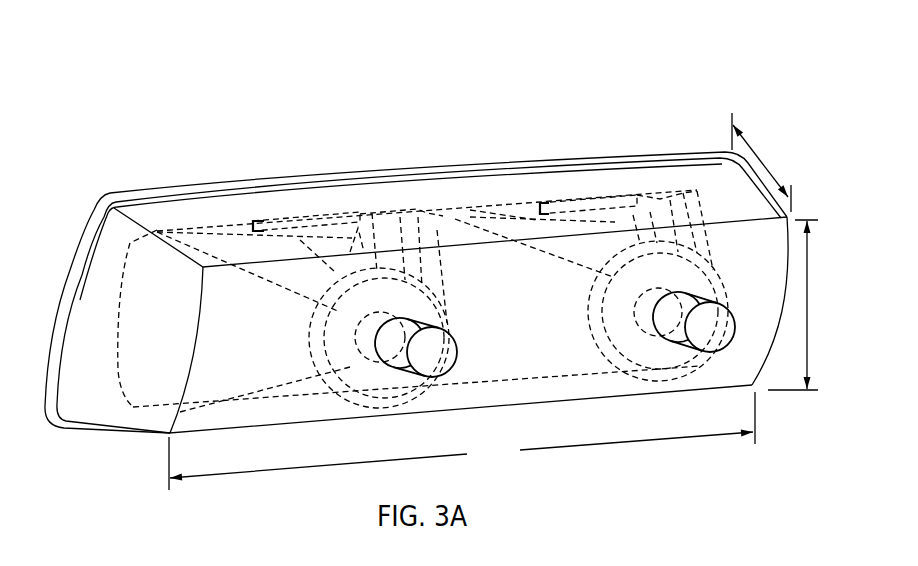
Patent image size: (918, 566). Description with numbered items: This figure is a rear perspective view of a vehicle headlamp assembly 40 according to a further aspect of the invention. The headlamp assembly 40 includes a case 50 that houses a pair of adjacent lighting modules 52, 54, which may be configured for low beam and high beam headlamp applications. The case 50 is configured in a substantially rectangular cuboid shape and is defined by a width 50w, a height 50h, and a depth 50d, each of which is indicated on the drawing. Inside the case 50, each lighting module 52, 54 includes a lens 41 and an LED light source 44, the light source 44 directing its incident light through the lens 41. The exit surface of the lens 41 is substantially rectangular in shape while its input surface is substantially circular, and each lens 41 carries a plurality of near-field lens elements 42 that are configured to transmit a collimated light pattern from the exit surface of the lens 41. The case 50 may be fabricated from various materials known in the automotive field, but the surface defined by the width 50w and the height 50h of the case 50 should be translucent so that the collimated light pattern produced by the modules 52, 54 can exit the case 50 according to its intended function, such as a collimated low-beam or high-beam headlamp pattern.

The vehicle headlamp assembly 40 is at (625, 65).
The case 50 is at (140, 192).
The lens 41 is at (170, 268).
The near-field lens elements 42 is at (277, 253).
The LED light source 44 is at (368, 385).
The lighting module 52 is at (228, 215).
The lighting module 54 is at (651, 186).
The depth 50d is at (760, 155).
The height 50h is at (795, 305).
The width 50w is at (462, 441).